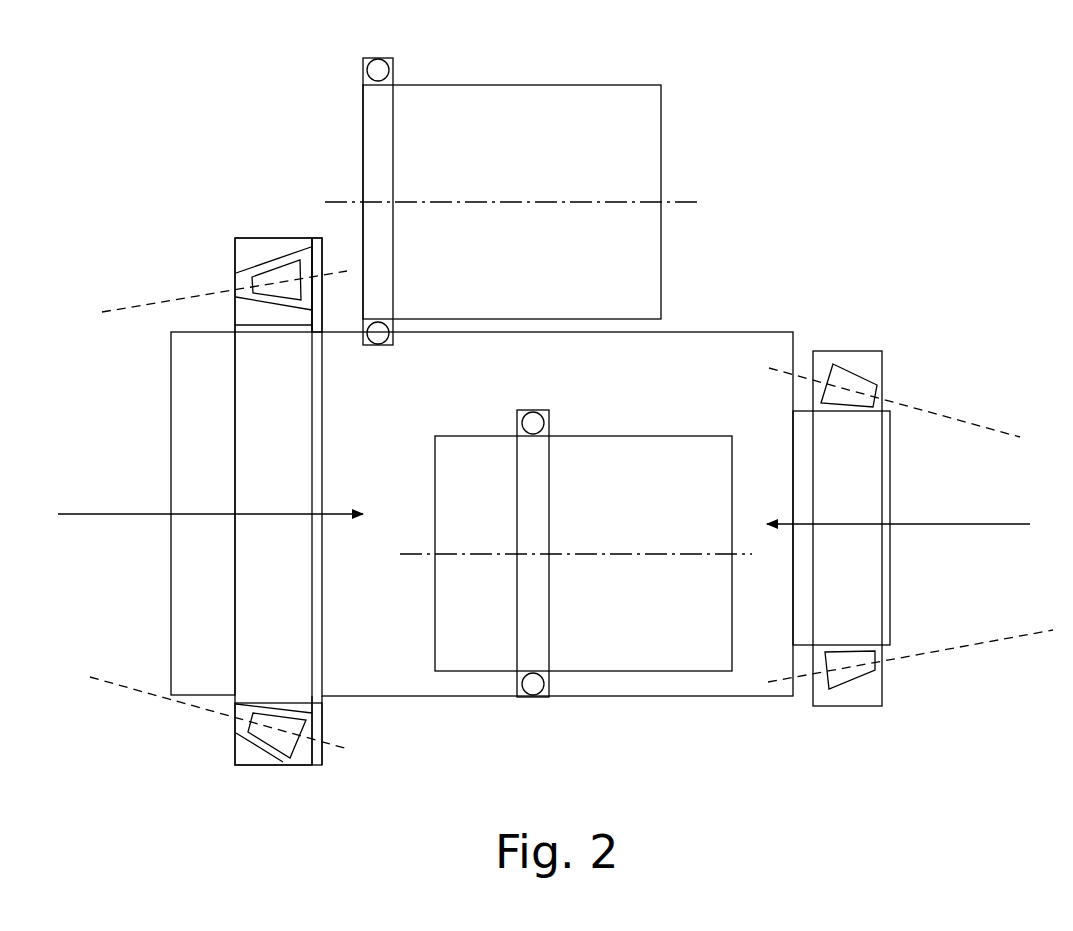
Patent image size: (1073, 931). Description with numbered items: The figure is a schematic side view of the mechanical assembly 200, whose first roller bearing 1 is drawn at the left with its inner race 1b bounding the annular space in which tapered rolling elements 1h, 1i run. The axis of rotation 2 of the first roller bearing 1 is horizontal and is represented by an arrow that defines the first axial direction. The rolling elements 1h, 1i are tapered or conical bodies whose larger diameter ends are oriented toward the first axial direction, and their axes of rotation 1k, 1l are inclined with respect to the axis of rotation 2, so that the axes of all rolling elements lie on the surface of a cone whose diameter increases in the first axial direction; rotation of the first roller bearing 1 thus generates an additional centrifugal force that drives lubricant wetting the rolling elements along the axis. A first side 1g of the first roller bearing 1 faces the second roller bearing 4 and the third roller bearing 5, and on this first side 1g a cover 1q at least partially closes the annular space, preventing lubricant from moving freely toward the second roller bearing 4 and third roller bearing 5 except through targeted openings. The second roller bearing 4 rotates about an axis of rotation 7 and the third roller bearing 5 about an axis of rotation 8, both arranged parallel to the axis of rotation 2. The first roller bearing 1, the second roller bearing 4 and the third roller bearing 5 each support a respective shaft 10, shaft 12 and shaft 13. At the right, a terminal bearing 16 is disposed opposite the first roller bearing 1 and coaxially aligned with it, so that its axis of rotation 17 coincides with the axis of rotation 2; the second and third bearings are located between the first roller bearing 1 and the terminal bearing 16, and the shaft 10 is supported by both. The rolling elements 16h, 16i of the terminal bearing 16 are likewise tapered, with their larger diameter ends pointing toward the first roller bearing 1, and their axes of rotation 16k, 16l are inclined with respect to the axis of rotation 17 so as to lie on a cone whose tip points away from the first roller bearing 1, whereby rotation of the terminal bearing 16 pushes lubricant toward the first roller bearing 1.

The first roller bearing 1 is at (235, 367).
The inner race 1b is at (272, 238).
The rolling element 1h is at (262, 270).
The axis of rotation 1k is at (152, 303).
The cover 1q is at (322, 312).
The first side 1g is at (312, 668).
The rolling element 1i is at (270, 740).
The axis of rotation 1l is at (113, 683).
The axis of rotation 2 is at (90, 516).
The second roller bearing 4 is at (362, 83).
The third roller bearing 5 is at (549, 615).
The axis of rotation 7 is at (682, 200).
The axis of rotation 8 is at (631, 553).
The shaft 10 is at (172, 410).
The shaft 12 is at (604, 96).
The shaft 13 is at (637, 436).
The terminal bearing 16 is at (883, 370).
The rolling element 16h is at (840, 367).
The rolling element 16i is at (855, 680).
The axis of rotation 16k is at (985, 425).
The axis of rotation 16l is at (1000, 637).
The axis of rotation 17 is at (988, 522).
The mechanical assembly 200 is at (925, 178).